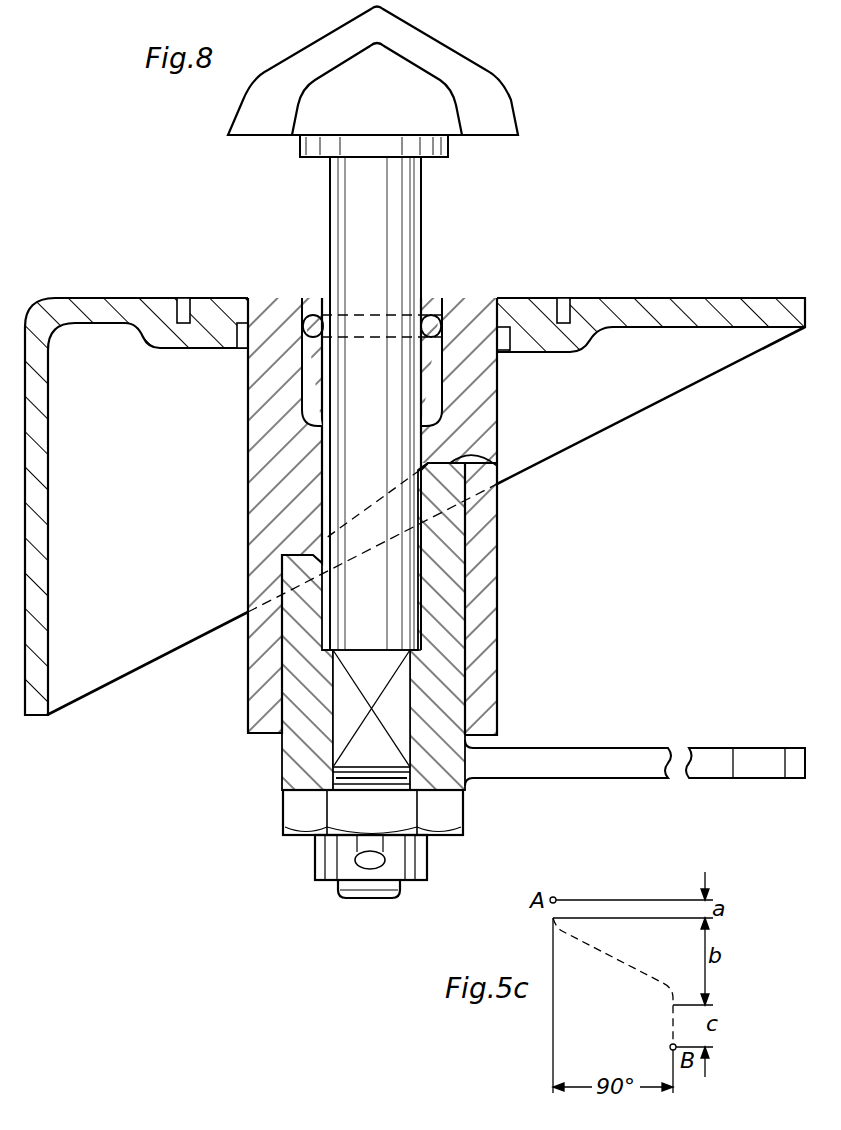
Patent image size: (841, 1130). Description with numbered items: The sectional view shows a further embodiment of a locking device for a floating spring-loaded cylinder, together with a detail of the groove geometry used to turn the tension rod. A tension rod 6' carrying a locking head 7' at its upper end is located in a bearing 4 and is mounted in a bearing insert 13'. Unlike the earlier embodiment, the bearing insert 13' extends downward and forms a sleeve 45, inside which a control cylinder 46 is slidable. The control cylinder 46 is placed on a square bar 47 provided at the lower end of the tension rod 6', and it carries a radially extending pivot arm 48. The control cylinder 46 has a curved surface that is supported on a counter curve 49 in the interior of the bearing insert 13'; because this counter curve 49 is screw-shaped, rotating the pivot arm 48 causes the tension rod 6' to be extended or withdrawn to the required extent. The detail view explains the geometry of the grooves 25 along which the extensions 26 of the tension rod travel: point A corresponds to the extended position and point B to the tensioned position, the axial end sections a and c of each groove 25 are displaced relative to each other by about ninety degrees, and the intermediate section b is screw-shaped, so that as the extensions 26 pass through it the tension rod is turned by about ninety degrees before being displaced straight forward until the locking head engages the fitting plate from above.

The locking head 7' is at (373, 82).
The tension rod 6' is at (405, 403).
The bearing 4 is at (655, 310).
The groove 25 is at (318, 305).
The extension 26 is at (450, 313).
The bearing insert 13' is at (402, 515).
The counter curve 49 is at (498, 469).
The sleeve 45 is at (480, 587).
The control cylinder 46 is at (452, 691).
The square bar 47 is at (368, 706).
The pivot arm 48 is at (629, 758).